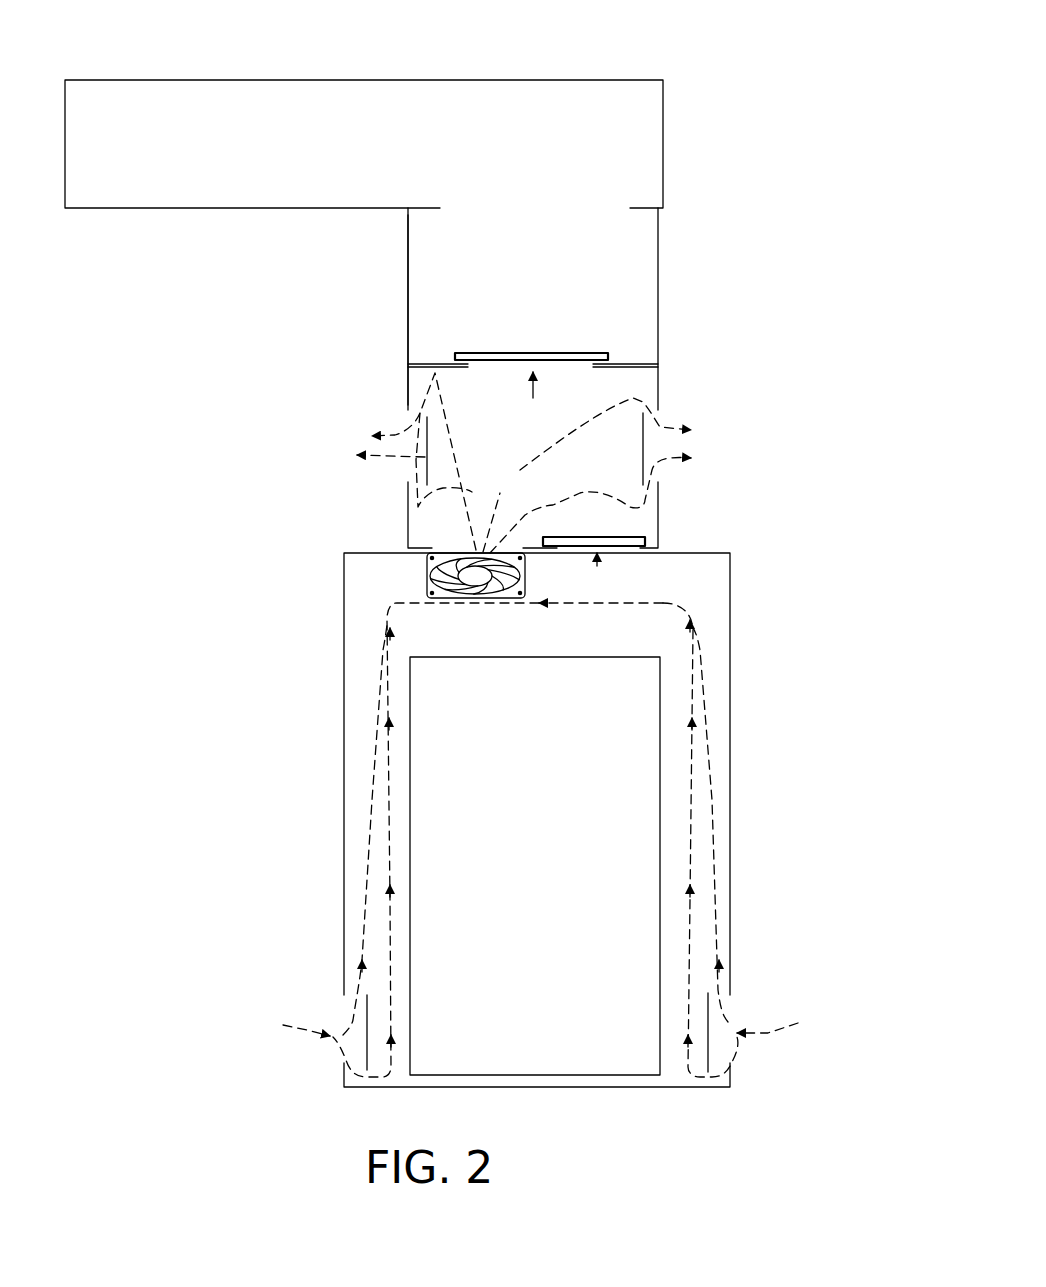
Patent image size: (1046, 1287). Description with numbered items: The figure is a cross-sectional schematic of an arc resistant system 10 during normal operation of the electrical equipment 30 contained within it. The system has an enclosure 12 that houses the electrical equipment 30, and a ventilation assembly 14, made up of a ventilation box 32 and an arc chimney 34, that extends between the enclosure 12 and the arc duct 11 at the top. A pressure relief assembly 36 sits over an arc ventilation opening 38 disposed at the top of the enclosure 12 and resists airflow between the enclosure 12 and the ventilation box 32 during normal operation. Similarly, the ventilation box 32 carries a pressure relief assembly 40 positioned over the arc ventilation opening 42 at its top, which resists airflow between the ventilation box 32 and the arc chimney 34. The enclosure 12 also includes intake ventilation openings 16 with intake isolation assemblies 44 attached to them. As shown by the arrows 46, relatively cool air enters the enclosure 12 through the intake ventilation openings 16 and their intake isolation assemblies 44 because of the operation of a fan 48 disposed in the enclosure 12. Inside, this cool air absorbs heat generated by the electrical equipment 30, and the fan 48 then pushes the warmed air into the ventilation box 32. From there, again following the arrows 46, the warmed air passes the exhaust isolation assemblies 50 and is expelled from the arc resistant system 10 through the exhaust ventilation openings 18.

The arc resistant system 10 is at (240, 327).
The arc duct 11 is at (663, 145).
The enclosure 12 is at (730, 585).
The ventilation assembly 14 is at (778, 213).
The intake ventilation openings 16 is at (338, 1013).
The exhaust ventilation openings 18 is at (393, 487).
The electrical equipment 30 is at (549, 795).
The ventilation box 32 is at (408, 394).
The arc chimney 34 is at (408, 285).
The pressure relief assembly 36 is at (597, 537).
The arc ventilation opening 38 is at (597, 566).
The pressure relief assembly 40 is at (530, 353).
The arc ventilation opening 42 is at (533, 398).
The intake isolation assemblies 44 is at (370, 1030).
The arrows 46 is at (552, 505).
The fan 48 is at (427, 578).
The exhaust isolation assemblies 50 is at (427, 453).